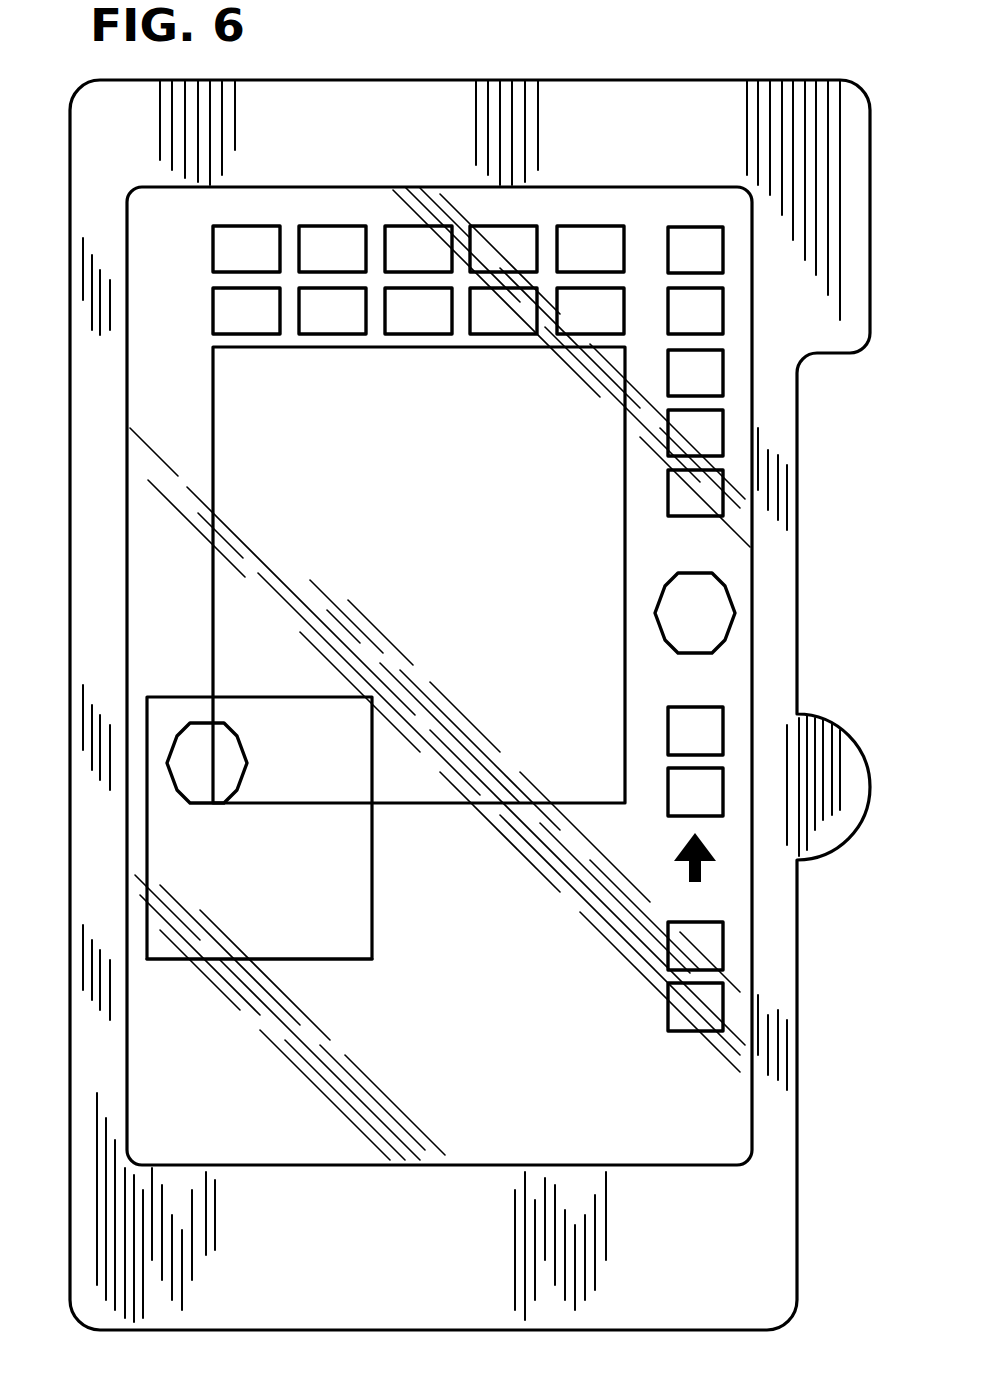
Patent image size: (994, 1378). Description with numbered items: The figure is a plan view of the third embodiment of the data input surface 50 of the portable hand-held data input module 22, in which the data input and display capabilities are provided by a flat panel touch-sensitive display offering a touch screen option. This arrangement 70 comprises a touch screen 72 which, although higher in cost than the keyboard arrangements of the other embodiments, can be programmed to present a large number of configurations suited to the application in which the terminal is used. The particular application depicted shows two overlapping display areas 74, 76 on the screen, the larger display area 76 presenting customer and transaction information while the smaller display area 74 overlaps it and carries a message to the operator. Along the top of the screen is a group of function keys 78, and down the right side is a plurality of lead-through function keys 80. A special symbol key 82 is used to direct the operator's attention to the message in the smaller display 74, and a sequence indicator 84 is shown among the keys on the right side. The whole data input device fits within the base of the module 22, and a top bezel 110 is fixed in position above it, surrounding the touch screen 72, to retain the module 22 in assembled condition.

The top bezel 110 is at (631, 80).
The surface 50 is at (85, 240).
The portable hand-held data input module 22 is at (112, 598).
The group of function keys 78 is at (255, 240).
The lead-through function keys 80 is at (710, 249).
The display area 76 is at (213, 400).
The special symbol key 82 is at (720, 608).
The touch screen arrangement 70 is at (112, 846).
The smaller display area 74 is at (343, 960).
The sequence indicator 84 is at (715, 855).
The touch screen 72 is at (150, 1050).